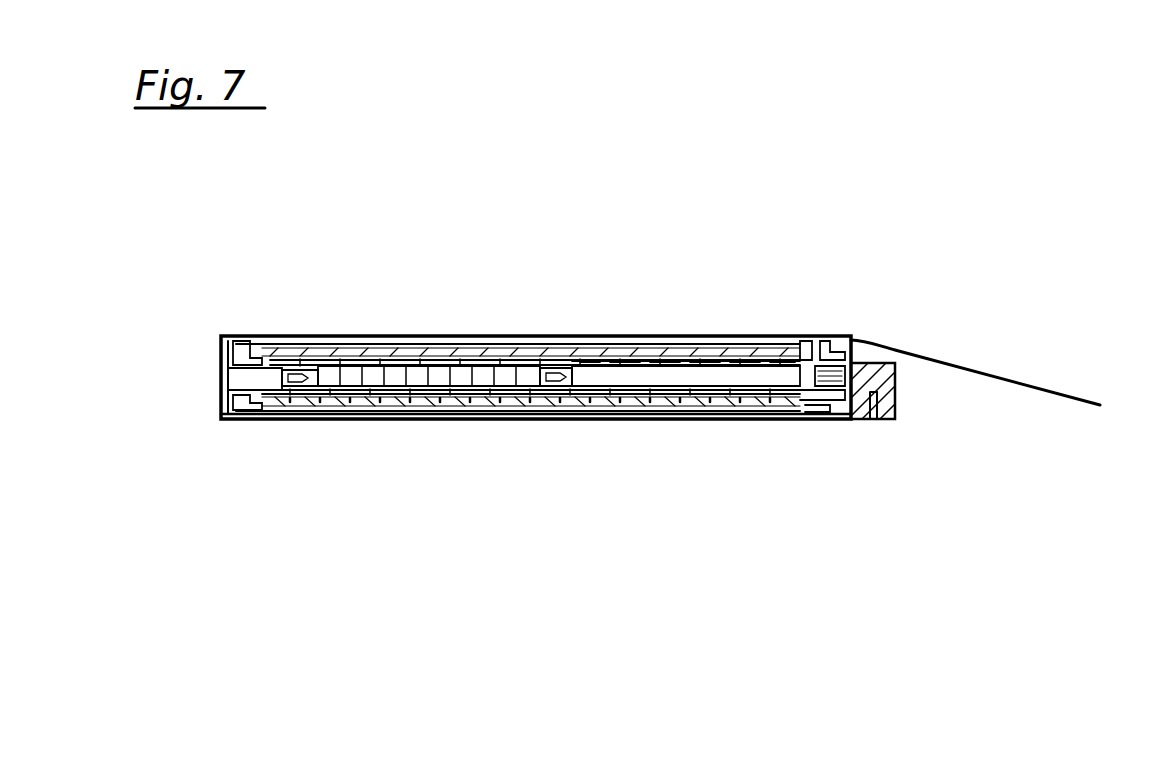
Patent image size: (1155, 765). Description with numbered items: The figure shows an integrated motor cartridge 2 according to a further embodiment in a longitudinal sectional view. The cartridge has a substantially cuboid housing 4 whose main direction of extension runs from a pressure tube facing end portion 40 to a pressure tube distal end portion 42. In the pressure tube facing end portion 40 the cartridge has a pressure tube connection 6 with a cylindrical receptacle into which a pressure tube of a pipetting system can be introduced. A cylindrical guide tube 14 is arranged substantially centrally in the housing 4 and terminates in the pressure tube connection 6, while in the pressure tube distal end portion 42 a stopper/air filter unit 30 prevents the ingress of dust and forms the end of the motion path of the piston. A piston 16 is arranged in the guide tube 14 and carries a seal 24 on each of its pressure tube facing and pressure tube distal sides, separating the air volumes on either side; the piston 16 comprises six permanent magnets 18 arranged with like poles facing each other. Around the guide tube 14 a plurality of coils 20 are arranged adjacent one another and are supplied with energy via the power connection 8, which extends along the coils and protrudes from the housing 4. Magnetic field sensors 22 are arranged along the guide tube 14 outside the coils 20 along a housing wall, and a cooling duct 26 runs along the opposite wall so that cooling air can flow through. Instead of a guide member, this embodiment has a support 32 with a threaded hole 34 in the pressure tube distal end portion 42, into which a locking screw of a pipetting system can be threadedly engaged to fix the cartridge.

The integrated motor cartridge 2 is at (772, 185).
The housing 4 is at (800, 420).
The pressure tube connection 6 is at (240, 379).
The power connection 8 is at (500, 357).
The guide tube 14 is at (650, 375).
The piston 16 is at (402, 372).
The permanent magnets 18 is at (528, 388).
The coils 20 is at (712, 358).
The magnetic field sensors 22 is at (600, 405).
The seal 24 is at (287, 365).
The cooling duct 26 is at (380, 348).
The stopper/air filter unit 30 is at (832, 370).
The support 32 is at (897, 401).
The threaded hole 34 is at (875, 398).
The pressure tube facing end portion 40 is at (235, 438).
The pressure tube distal end portion 42 is at (840, 436).